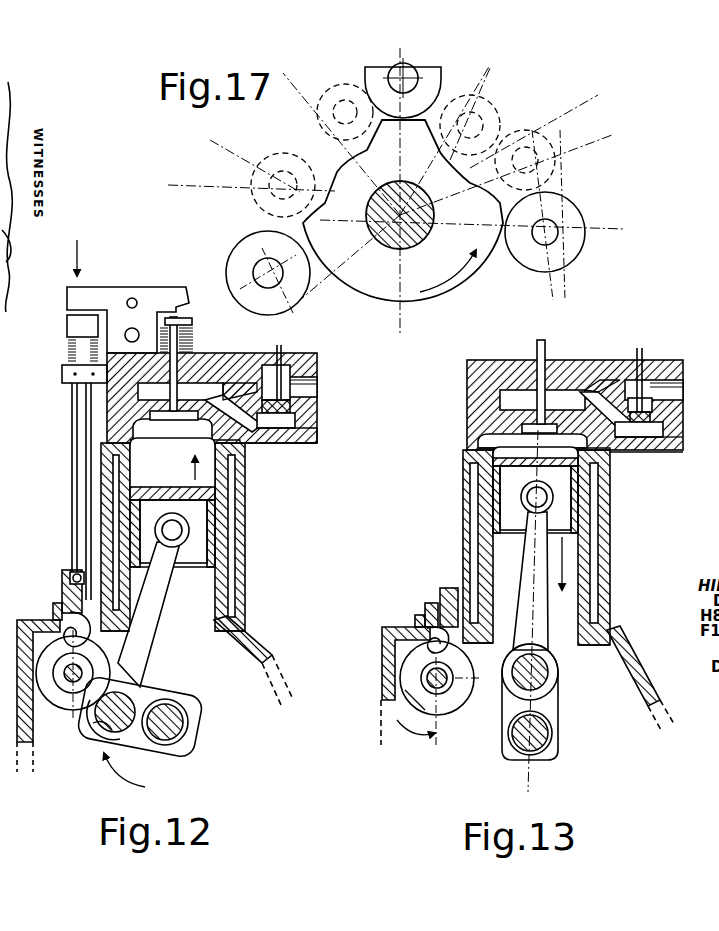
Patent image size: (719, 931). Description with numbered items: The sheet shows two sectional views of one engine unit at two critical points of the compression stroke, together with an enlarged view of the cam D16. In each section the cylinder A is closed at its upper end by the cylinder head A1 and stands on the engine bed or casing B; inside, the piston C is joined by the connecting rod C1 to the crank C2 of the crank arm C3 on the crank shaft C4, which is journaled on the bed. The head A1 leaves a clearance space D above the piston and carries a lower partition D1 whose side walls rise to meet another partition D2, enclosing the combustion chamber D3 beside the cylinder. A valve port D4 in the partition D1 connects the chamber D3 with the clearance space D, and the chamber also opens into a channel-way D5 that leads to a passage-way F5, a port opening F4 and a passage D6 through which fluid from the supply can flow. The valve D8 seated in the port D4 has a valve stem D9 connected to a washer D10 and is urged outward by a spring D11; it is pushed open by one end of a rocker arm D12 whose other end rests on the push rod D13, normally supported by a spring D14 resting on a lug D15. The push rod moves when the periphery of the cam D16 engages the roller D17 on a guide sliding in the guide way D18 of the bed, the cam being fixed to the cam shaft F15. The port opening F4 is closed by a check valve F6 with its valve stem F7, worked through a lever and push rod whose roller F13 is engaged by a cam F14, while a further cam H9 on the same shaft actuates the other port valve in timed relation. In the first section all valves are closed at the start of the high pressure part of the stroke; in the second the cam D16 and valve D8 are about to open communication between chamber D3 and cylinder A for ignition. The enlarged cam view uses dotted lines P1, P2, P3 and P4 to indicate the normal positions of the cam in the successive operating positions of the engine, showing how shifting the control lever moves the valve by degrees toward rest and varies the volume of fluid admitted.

In FIG. 12, the cylinder A is at (223, 565).
In FIG. 13, the cylinder A is at (593, 566).
In FIG. 12, the cylinder head A1 is at (228, 398).
In FIG. 13, the cylinder head A1 is at (593, 405).
In FIG. 12, the engine bed or casing B is at (270, 662).
In FIG. 13, the engine bed or casing B is at (638, 673).
In FIG. 12, the piston C is at (158, 485).
In FIG. 13, the piston C is at (513, 517).
In FIG. 12, the connecting rod C1 is at (135, 655).
In FIG. 13, the connecting rod C1 is at (530, 600).
In FIG. 12, the crank C2 is at (97, 723).
In FIG. 13, the crank C2 is at (549, 668).
In FIG. 12, the crank arm C3 is at (152, 702).
In FIG. 13, the crank arm C3 is at (548, 710).
In FIG. 12, the crank shaft C4 is at (190, 722).
In FIG. 13, the crank shaft C4 is at (553, 740).
In FIG. 12, the clearance space D is at (247, 440).
In FIG. 13, the clearance space D is at (585, 448).
In FIG. 12, the partition D1 is at (155, 405).
In FIG. 13, the partition D1 is at (517, 412).
In FIG. 12, the partition D2 is at (152, 380).
In FIG. 13, the partition D2 is at (523, 388).
In FIG. 12, the combustion chamber D3 is at (200, 362).
In FIG. 13, the combustion chamber D3 is at (553, 392).
In FIG. 12, the valve port D4 is at (243, 368).
In FIG. 13, the valve port D4 is at (600, 380).
In FIG. 12, the channel-way D5 is at (241, 443).
In FIG. 13, the channel-way D5 is at (597, 448).
In FIG. 12, the passage D6 is at (315, 380).
In FIG. 13, the passage D6 is at (683, 385).
In FIG. 12, the valve D8 is at (118, 423).
In FIG. 13, the valve D8 is at (500, 445).
In FIG. 12, the valve stem D9 is at (191, 327).
In FIG. 13, the valve stem D9 is at (542, 340).
In FIG. 12, the washer D10 is at (190, 318).
In FIG. 12, the spring D11 is at (166, 328).
In FIG. 12, the rocker arm D12 is at (97, 287).
In FIG. 12, the push rod D13 is at (67, 327).
In FIG. 12, the spring D14 is at (68, 348).
In FIG. 12, the lug D15 is at (62, 375).
In FIG. 17, the cam D16 is at (370, 295).
In FIG. 12, the cam D16 is at (58, 690).
In FIG. 13, the cam D16 is at (430, 705).
In FIG. 12, the roller D17 is at (58, 613).
In FIG. 13, the roller D17 is at (427, 632).
In FIG. 12, the guide way D18 is at (75, 578).
In FIG. 13, the guide way D18 is at (442, 588).
In FIG. 12, the port opening F4 is at (285, 362).
In FIG. 13, the port opening F4 is at (645, 368).
In FIG. 12, the passage-way F5 is at (313, 445).
In FIG. 13, the passage-way F5 is at (665, 428).
In FIG. 12, the check valve F6 is at (281, 440).
In FIG. 13, the check valve F6 is at (633, 430).
In FIG. 17, the valve stem F7 is at (268, 300).
In FIG. 12, the valve stem F7 is at (271, 370).
In FIG. 13, the valve stem F7 is at (638, 348).
In FIG. 12, the roller F13 is at (80, 640).
In FIG. 13, the roller F13 is at (425, 650).
In FIG. 12, the cam F14 is at (58, 663).
In FIG. 13, the cam F14 is at (430, 692).
In FIG. 17, the cam shaft F15 is at (432, 232).
In FIG. 12, the cam shaft F15 is at (73, 680).
In FIG. 13, the cam shaft F15 is at (430, 680).
In FIG. 12, the cam H9 is at (85, 683).
In FIG. 13, the cam H9 is at (497, 732).
In FIG. 17, the dotted line position P1 is at (260, 183).
In FIG. 17, the dotted line position P2 is at (330, 93).
In FIG. 17, the dotted line position P3 is at (427, 122).
In FIG. 17, the dotted line position P4 is at (523, 150).